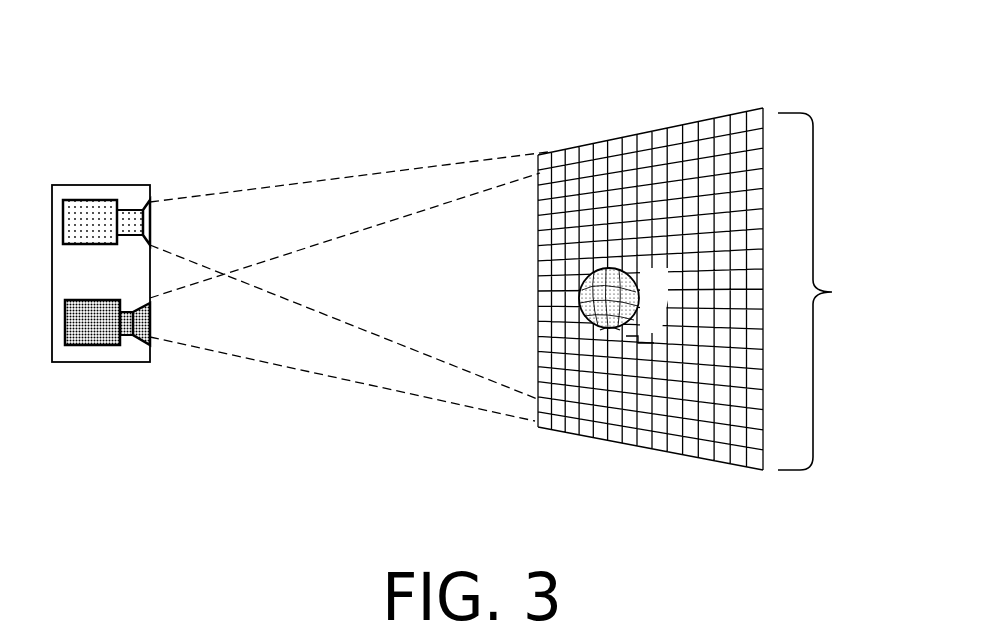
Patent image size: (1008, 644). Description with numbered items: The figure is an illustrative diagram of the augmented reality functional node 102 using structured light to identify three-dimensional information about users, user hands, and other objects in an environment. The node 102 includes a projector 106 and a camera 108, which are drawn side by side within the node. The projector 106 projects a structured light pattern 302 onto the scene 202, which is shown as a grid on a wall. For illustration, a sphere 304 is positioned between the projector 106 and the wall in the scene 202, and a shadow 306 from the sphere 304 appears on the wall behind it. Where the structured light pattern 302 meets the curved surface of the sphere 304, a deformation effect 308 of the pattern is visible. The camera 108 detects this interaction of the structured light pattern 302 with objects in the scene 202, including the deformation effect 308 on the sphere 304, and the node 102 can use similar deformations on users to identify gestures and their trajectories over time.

The augmented reality functional node 102 is at (85, 362).
The projector 106 is at (88, 223).
The camera 108 is at (110, 343).
The scene 202 is at (712, 289).
The structured light pattern 302 is at (538, 173).
The sphere 304 is at (603, 265).
The shadow 306 is at (656, 285).
The deformation effect 308 is at (588, 316).